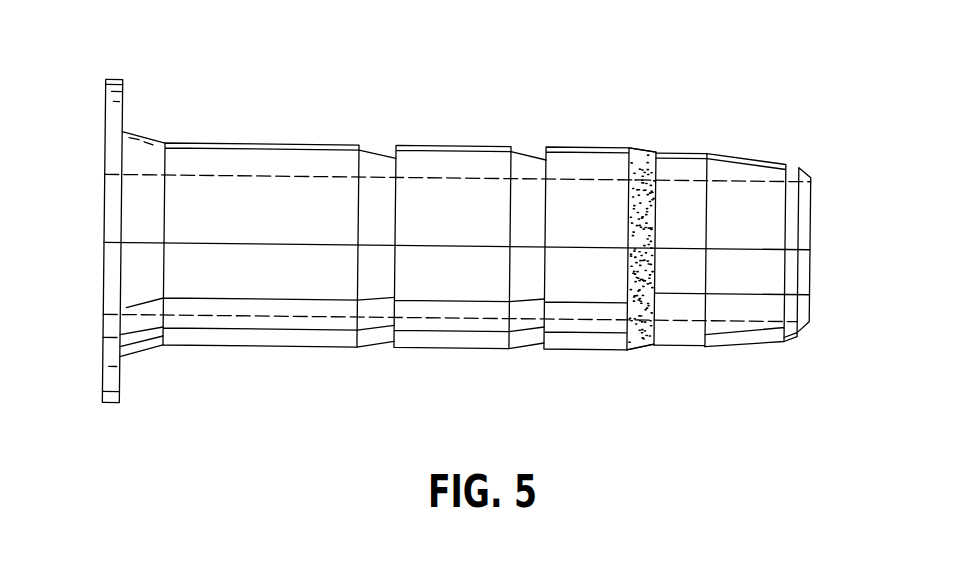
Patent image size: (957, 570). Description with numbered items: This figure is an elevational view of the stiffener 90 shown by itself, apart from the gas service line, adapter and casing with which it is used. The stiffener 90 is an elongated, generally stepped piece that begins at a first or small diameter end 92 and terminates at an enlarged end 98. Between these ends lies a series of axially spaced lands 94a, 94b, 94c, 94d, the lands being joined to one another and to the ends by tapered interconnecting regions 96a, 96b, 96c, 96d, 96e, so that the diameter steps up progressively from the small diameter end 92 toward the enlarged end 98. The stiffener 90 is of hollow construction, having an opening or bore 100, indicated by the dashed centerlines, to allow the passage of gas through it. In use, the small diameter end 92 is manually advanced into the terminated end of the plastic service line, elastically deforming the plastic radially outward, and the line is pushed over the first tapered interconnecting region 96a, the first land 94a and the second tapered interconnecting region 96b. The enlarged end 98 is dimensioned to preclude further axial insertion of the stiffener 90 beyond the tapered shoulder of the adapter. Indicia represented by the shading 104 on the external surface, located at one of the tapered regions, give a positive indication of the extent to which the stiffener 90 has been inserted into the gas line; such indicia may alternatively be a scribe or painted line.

The stiffener 90 is at (461, 132).
The small diameter end 92 is at (806, 170).
The first land 94a is at (686, 347).
The second land 94b is at (580, 349).
The third land 94c is at (433, 348).
The fourth land 94d is at (248, 347).
The first tapered interconnecting region 96a is at (733, 157).
The second tapered interconnecting region 96b is at (640, 150).
The third tapered interconnecting region 96c is at (527, 154).
The fourth tapered interconnecting region 96d is at (376, 150).
The fifth tapered interconnecting region 96e is at (149, 139).
The enlarged end 98 is at (112, 117).
The bore 100 is at (207, 177).
The shading 104 is at (636, 215).